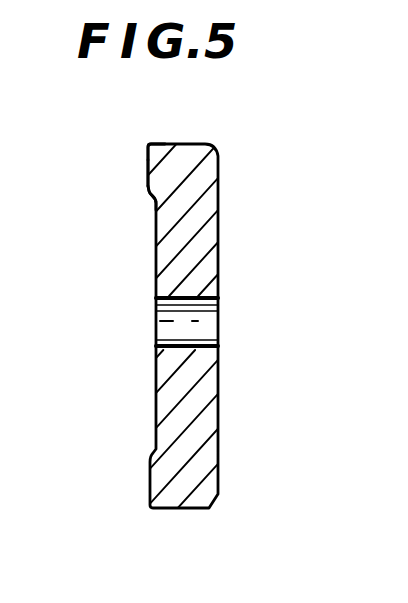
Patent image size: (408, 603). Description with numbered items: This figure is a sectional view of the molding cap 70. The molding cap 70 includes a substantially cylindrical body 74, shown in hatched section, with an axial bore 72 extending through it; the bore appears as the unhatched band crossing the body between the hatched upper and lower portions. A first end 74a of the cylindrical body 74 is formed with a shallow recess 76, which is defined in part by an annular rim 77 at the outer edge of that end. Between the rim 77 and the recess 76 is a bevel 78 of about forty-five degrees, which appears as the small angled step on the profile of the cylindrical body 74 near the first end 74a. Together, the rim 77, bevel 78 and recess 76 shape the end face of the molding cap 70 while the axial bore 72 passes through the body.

The molding cap 70 is at (218, 165).
The axial bore 72 is at (218, 342).
The cylindrical body 74 is at (218, 234).
The first end 74a is at (148, 177).
The shallow recess 76 is at (156, 447).
The annular rim 77 is at (147, 159).
The bevel 78 is at (151, 198).